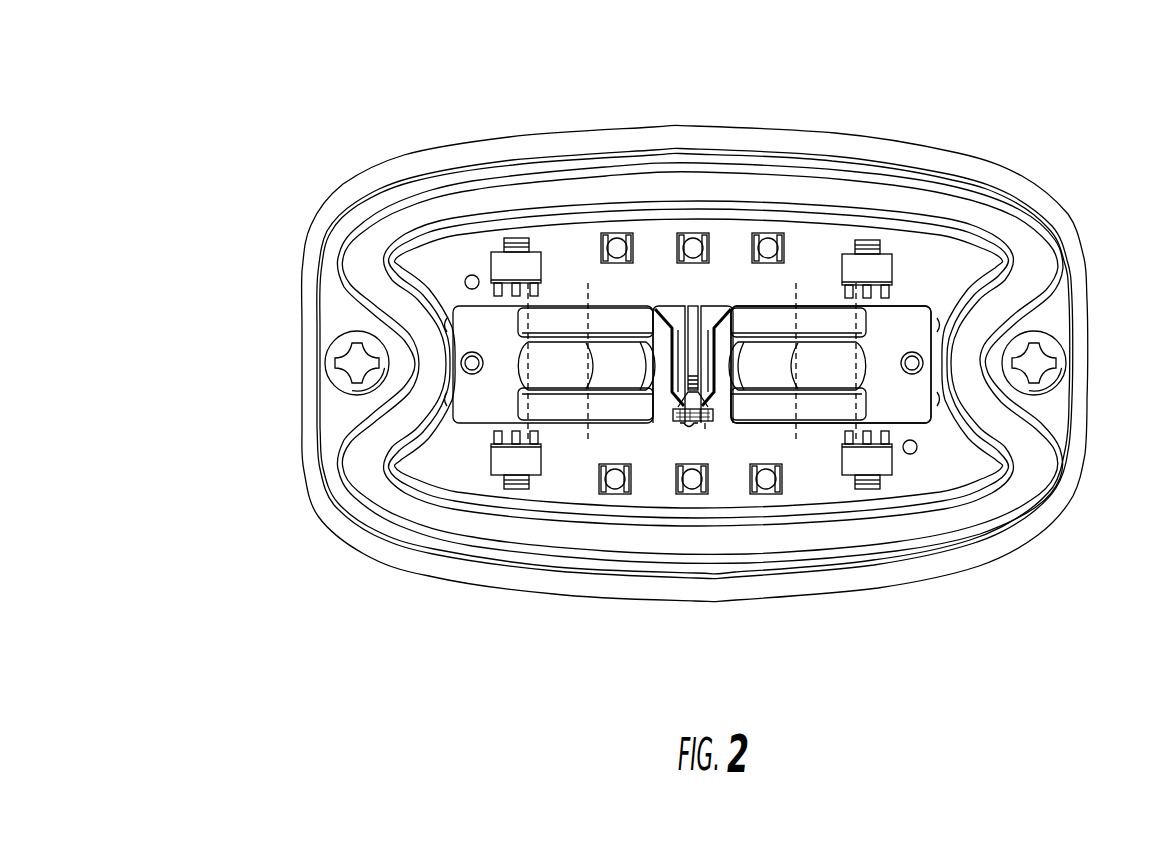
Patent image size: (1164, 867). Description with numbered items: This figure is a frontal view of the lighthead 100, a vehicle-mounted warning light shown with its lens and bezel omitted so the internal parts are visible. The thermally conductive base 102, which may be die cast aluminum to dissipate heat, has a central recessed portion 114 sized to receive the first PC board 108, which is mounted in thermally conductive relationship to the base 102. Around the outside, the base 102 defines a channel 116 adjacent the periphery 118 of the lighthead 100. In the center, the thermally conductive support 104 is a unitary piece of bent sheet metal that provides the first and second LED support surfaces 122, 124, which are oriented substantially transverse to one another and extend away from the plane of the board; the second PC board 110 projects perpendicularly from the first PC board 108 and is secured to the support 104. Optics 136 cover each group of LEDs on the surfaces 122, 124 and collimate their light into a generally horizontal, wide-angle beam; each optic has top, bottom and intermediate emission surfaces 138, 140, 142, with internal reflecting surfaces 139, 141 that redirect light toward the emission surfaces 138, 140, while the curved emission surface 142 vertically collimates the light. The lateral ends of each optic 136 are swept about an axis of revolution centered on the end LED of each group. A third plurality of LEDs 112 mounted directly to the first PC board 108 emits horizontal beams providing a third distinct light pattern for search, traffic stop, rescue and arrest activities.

The lighthead 100 is at (983, 657).
The thermally conductive base 102 is at (982, 212).
The thermally conductive support 104 is at (983, 277).
The first PC board 108 is at (813, 237).
The second PC board 110 is at (702, 428).
The third plurality of LEDs 112 is at (768, 235).
The central recessed portion 114 is at (957, 458).
The channel 116 is at (360, 467).
The periphery 118 is at (433, 540).
The first LED support surface 122 is at (672, 312).
The second LED support surface 124 is at (717, 312).
The optics 136 is at (570, 445).
The top emission surface 138 is at (840, 318).
The internal reflecting surface 139 is at (928, 311).
The bottom emission surface 140 is at (867, 405).
The internal reflecting surface 141 is at (912, 472).
The intermediate emission surface 142 is at (848, 363).